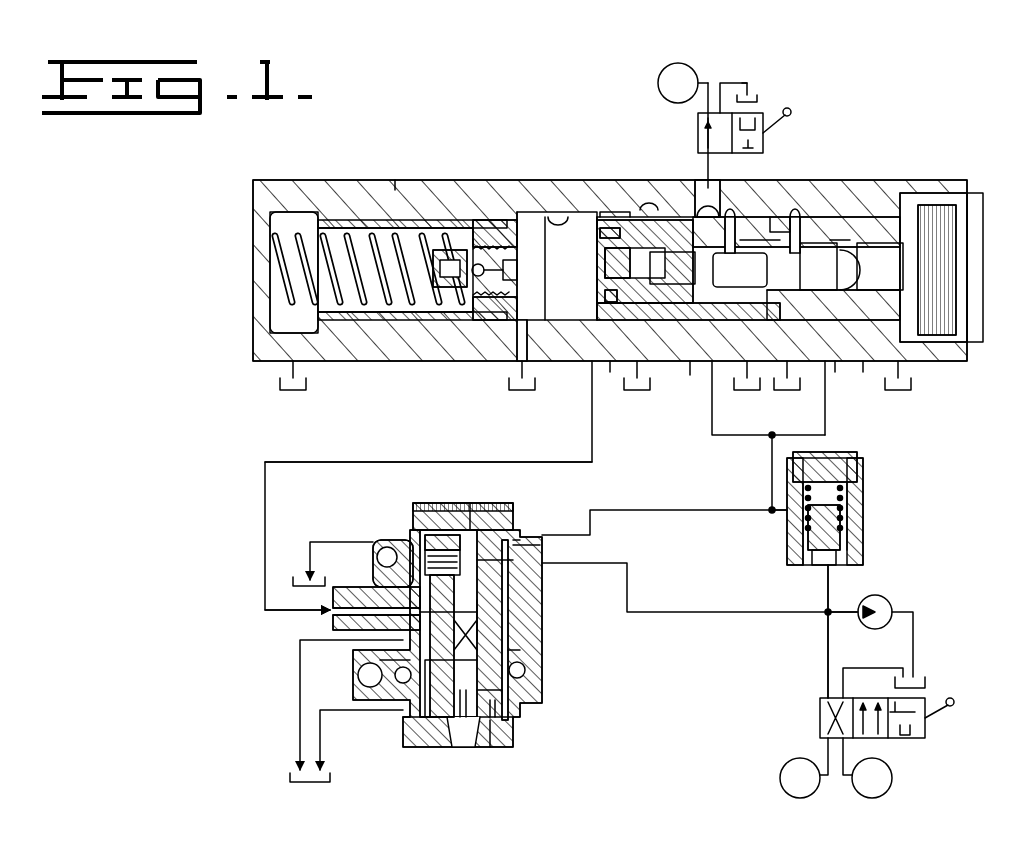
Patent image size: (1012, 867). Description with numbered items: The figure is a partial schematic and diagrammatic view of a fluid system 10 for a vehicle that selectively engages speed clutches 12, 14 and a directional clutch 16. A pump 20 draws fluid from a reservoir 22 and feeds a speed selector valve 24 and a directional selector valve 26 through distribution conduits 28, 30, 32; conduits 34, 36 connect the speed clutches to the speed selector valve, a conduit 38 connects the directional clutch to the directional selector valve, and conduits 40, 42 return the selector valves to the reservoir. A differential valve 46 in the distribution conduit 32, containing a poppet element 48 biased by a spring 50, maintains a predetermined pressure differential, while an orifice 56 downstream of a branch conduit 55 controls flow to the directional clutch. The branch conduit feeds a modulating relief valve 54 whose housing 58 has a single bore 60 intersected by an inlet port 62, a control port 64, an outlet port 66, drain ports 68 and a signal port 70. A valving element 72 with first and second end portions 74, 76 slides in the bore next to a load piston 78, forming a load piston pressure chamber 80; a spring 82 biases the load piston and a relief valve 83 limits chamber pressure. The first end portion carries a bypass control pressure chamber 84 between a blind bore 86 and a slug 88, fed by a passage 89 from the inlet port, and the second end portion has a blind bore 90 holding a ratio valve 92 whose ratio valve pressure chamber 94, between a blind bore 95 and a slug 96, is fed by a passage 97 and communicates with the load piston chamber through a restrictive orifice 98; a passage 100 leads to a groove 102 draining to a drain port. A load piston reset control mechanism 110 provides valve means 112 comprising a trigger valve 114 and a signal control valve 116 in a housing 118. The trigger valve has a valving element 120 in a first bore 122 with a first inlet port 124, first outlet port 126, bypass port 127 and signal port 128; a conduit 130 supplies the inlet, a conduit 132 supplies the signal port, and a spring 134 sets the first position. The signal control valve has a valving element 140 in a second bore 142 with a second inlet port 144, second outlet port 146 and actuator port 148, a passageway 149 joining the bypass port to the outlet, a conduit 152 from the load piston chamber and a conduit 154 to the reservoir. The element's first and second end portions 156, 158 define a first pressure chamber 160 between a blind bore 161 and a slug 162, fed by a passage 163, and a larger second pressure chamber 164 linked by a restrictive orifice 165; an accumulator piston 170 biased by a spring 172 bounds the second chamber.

The fluid system 10 is at (412, 102).
The speed clutch 12 is at (888, 788).
The speed clutch 14 is at (785, 795).
The directional clutch 16 is at (658, 83).
The pump 20 is at (892, 600).
The reservoir 22 is at (292, 775).
The speed selector valve 24 is at (928, 725).
The directional selector valve 26 is at (780, 148).
The distribution conduit 28 is at (850, 615).
The distribution conduit 30 is at (825, 640).
The distribution conduit 32 is at (815, 580).
The conduit 34 is at (850, 758).
The conduit 36 is at (830, 780).
The conduit 38 is at (720, 85).
The conduit 40 is at (843, 672).
The conduit 42 is at (750, 82).
The differential valve 46 is at (868, 552).
The poppet element 48 is at (845, 535).
The spring 50 is at (850, 488).
The modulating relief valve 54 is at (445, 142).
The branch conduit 55 is at (828, 408).
The orifice 56 is at (712, 430).
The housing 58 is at (915, 185).
The single bore 60 is at (548, 200).
The inlet port 62 is at (835, 366).
The control port 64 is at (745, 370).
The outlet port 66 is at (715, 185).
The drain ports 68 is at (905, 372).
The signal port 70 is at (540, 370).
The valving element 72 is at (660, 215).
The first end portion 74 is at (885, 195).
The second end portion 76 is at (588, 205).
The load piston 78 is at (395, 178).
The load piston pressure chamber 80 is at (490, 358).
The spring 82 is at (266, 222).
The relief valve 83 is at (440, 246).
The bypass control pressure chamber 84 is at (818, 266).
The blind bore 86 is at (960, 350).
The slug 88 is at (871, 266).
The passage 89 is at (865, 366).
The blind bore 90 is at (760, 235).
The ratio valve 92 is at (604, 236).
The ratio valve pressure chamber 94 is at (672, 268).
The blind bore 95 is at (840, 240).
The slug 96 is at (740, 270).
The passage 97 is at (610, 296).
The restrictive orifice 98 is at (612, 262).
The passage 100 is at (690, 366).
The groove 102 is at (608, 366).
The load piston reset control mechanism 110 is at (222, 496).
The valve means 112 is at (405, 500).
The trigger valve 114 is at (535, 548).
The signal control valve 116 is at (410, 515).
The housing 118 is at (482, 510).
The valving element 120 is at (515, 585).
The first bore 122 is at (525, 615).
The first inlet port 124 is at (528, 565).
The first outlet port 126 is at (538, 652).
The bypass port 127 is at (525, 670).
The signal port 128 is at (518, 538).
The conduit 130 is at (653, 612).
The conduit 132 is at (608, 512).
The spring 134 is at (520, 715).
The valving element 140 is at (370, 630).
The second bore 142 is at (410, 725).
The second inlet port 144 is at (335, 622).
The second outlet port 146 is at (380, 663).
The actuator port 148 is at (465, 515).
The passageway 149 is at (505, 698).
The conduit 152 is at (430, 460).
The conduit 154 is at (300, 700).
The first end portion 156 is at (400, 565).
The second end portion 158 is at (525, 735).
The first pressure chamber 160 is at (270, 600).
The blind bore 161 is at (410, 523).
The slug 162 is at (380, 552).
The passage 163 is at (335, 595).
The second pressure chamber 164 is at (515, 750).
The restrictive orifice 165 is at (520, 690).
The accumulator piston 170 is at (360, 682).
The spring 172 is at (445, 740).